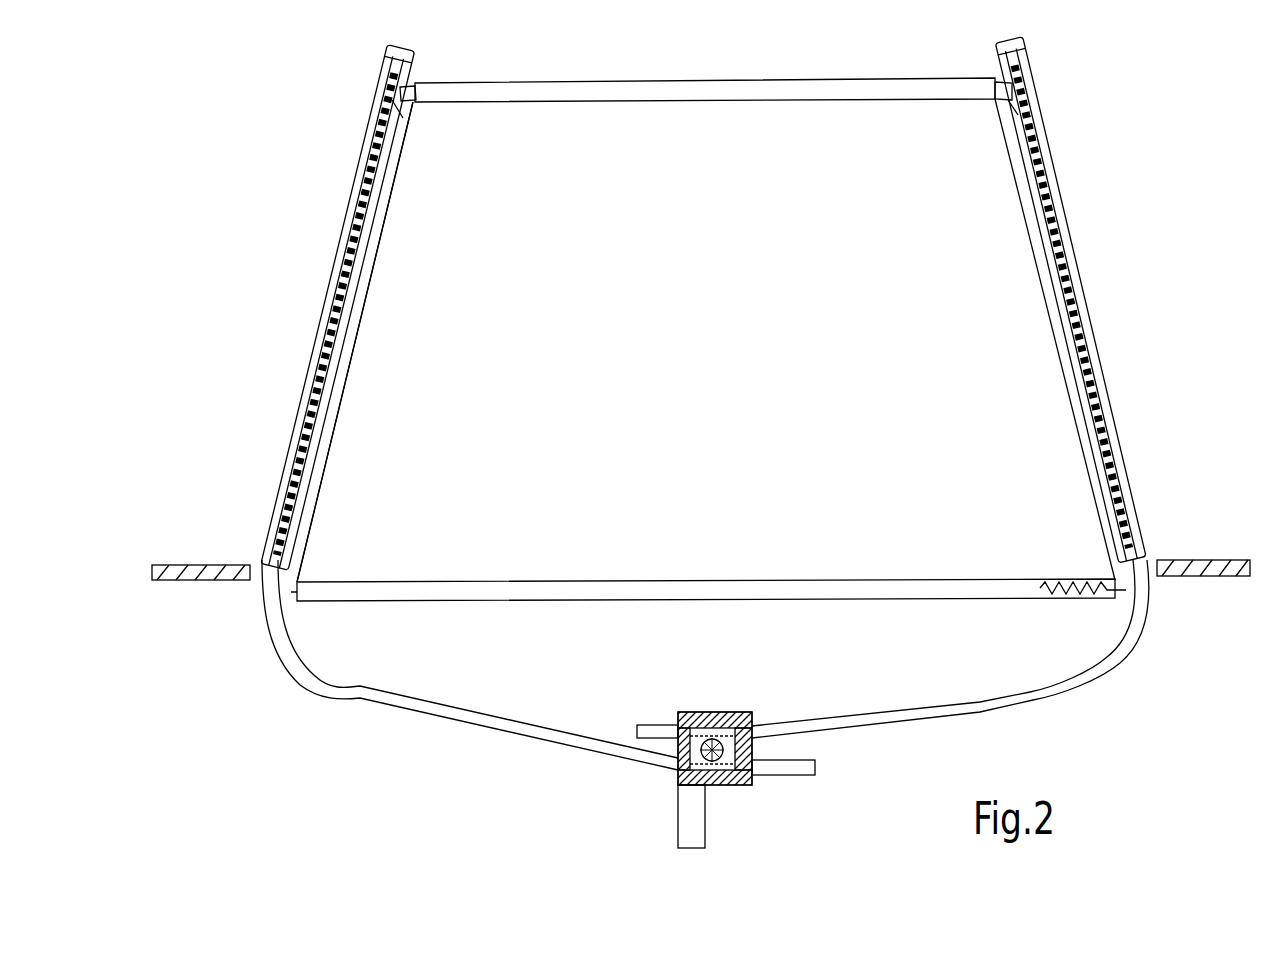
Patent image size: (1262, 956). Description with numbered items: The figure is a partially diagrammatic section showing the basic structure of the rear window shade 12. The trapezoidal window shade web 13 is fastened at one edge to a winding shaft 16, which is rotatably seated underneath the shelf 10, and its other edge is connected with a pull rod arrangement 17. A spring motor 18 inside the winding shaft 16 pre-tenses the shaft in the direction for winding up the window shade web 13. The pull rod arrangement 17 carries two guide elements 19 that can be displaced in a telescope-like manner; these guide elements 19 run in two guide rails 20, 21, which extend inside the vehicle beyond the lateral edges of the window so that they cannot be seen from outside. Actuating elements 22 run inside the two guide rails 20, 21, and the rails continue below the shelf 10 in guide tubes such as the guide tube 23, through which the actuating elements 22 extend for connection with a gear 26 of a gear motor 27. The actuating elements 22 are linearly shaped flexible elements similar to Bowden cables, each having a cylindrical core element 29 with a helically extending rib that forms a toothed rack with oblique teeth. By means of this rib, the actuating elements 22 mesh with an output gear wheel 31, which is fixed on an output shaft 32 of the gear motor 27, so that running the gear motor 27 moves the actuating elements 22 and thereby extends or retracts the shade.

The shelf 10 is at (190, 572).
The rear window shade 12 is at (289, 172).
The window shade web 13 is at (760, 416).
The winding shaft 16 is at (1102, 605).
The pull rod arrangement 17 is at (725, 92).
The spring motor 18 is at (407, 88).
The guide elements 19 is at (1008, 84).
The guide rail 20 is at (360, 293).
The guide rail 21 is at (1100, 360).
The actuating elements 22 is at (350, 270).
The guide tube 23 is at (437, 712).
The gear 26 is at (755, 786).
The gear motor 27 is at (718, 743).
The core element 29 is at (1000, 708).
The output gear wheel 31 is at (752, 757).
The output shaft 32 is at (680, 718).